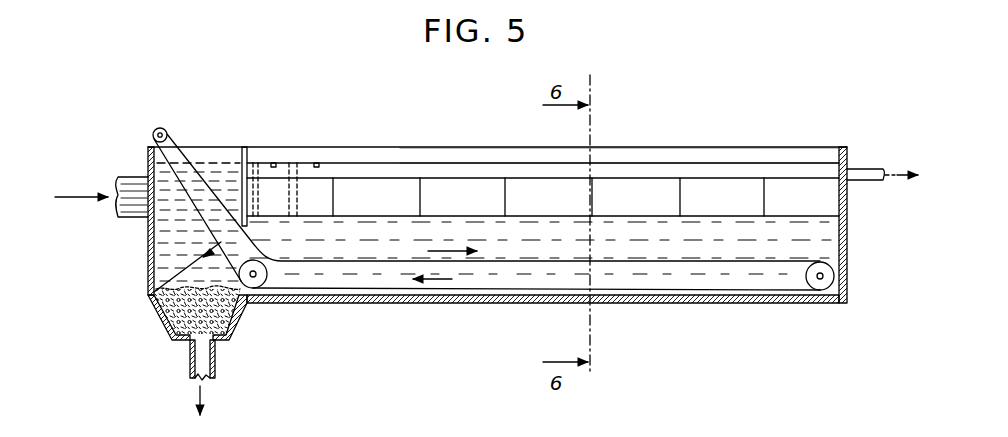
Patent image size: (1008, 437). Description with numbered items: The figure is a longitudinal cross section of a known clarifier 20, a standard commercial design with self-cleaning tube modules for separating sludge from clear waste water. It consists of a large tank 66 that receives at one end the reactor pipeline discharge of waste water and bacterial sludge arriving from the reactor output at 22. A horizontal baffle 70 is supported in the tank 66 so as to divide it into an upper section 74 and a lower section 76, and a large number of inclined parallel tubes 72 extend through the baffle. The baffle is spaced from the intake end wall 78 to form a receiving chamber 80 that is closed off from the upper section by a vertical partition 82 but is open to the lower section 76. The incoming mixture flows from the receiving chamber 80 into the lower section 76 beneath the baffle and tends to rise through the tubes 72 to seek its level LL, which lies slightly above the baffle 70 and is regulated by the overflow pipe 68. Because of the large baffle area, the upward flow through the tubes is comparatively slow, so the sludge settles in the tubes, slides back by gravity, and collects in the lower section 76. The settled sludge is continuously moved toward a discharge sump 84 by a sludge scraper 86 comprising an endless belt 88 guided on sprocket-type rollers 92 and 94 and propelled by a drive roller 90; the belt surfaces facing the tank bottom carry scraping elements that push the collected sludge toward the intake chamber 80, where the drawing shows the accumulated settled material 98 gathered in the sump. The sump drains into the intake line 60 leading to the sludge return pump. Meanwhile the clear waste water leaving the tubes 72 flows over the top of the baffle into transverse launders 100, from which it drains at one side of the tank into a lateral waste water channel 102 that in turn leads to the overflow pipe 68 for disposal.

The clarifier 20 is at (398, 146).
The reactor output 22 is at (133, 177).
The intake line 60 is at (190, 373).
The tank 66 is at (790, 303).
The overflow pipe 68 is at (868, 170).
The horizontal baffle 70 is at (620, 186).
The inclined parallel tubes 72 is at (257, 162).
The upper section 74 is at (727, 158).
The lower section 76 is at (823, 233).
The intake end wall 78 is at (148, 250).
The receiving chamber 80 is at (207, 168).
The vertical partition 82 is at (236, 168).
The discharge sump 84 is at (238, 322).
The sludge scraper 86 is at (148, 292).
The endless belt 88 is at (387, 262).
The drive roller 90 is at (155, 130).
The sprocket-type roller 92 is at (265, 285).
The sprocket-type roller 94 is at (834, 276).
The settled sludge 98 is at (172, 337).
The transverse launders 100 is at (276, 162).
The lateral waste water channel 102 is at (800, 172).
The level LL is at (211, 160).